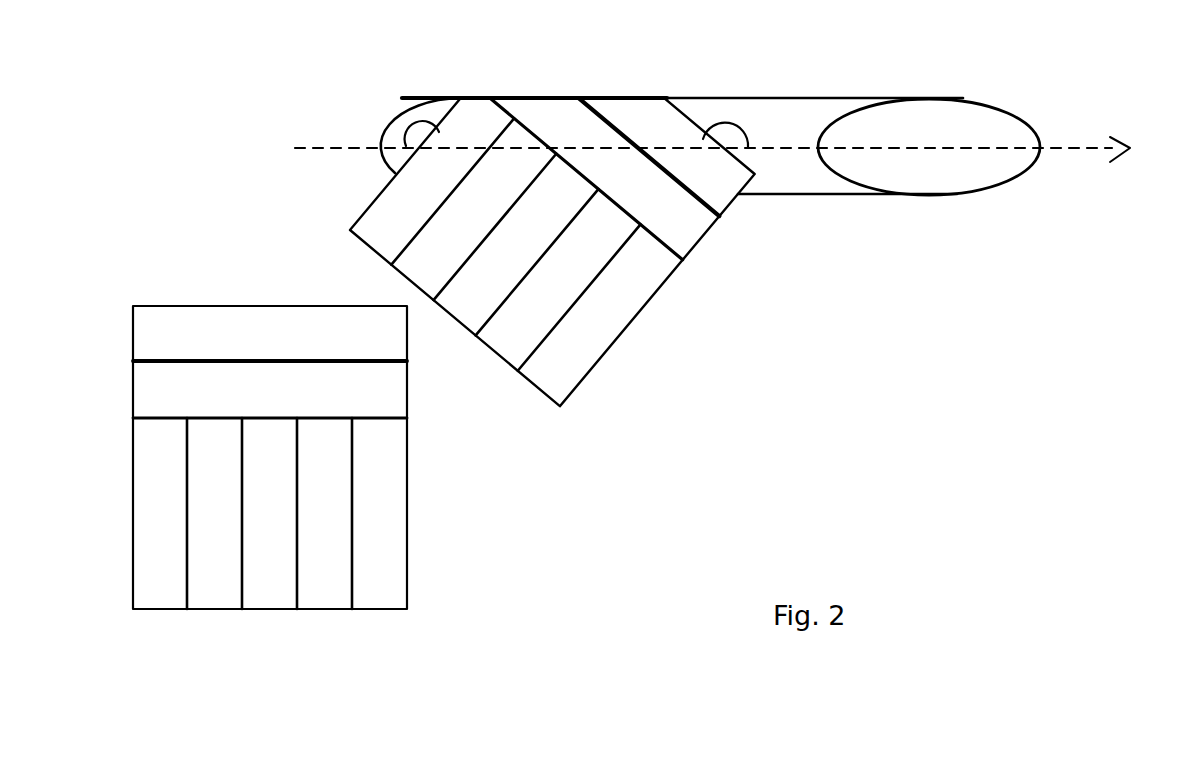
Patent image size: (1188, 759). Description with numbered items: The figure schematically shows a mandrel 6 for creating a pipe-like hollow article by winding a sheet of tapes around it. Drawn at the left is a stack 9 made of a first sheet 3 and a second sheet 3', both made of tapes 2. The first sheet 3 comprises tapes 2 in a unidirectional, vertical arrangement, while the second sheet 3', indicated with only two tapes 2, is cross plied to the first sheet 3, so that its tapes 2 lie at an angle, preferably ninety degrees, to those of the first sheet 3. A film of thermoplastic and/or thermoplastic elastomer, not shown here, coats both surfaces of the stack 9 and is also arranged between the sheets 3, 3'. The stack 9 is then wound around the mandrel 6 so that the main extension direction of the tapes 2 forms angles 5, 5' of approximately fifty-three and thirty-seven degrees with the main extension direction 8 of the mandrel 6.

The tapes 2 is at (300, 350).
The first sheet 3 is at (438, 513).
The second sheet 3' is at (270, 297).
The angle 5 is at (401, 108).
The angle 5' is at (743, 94).
The mandrel 6 is at (802, 167).
The main extension direction 8 is at (725, 151).
The stack 9 is at (429, 304).